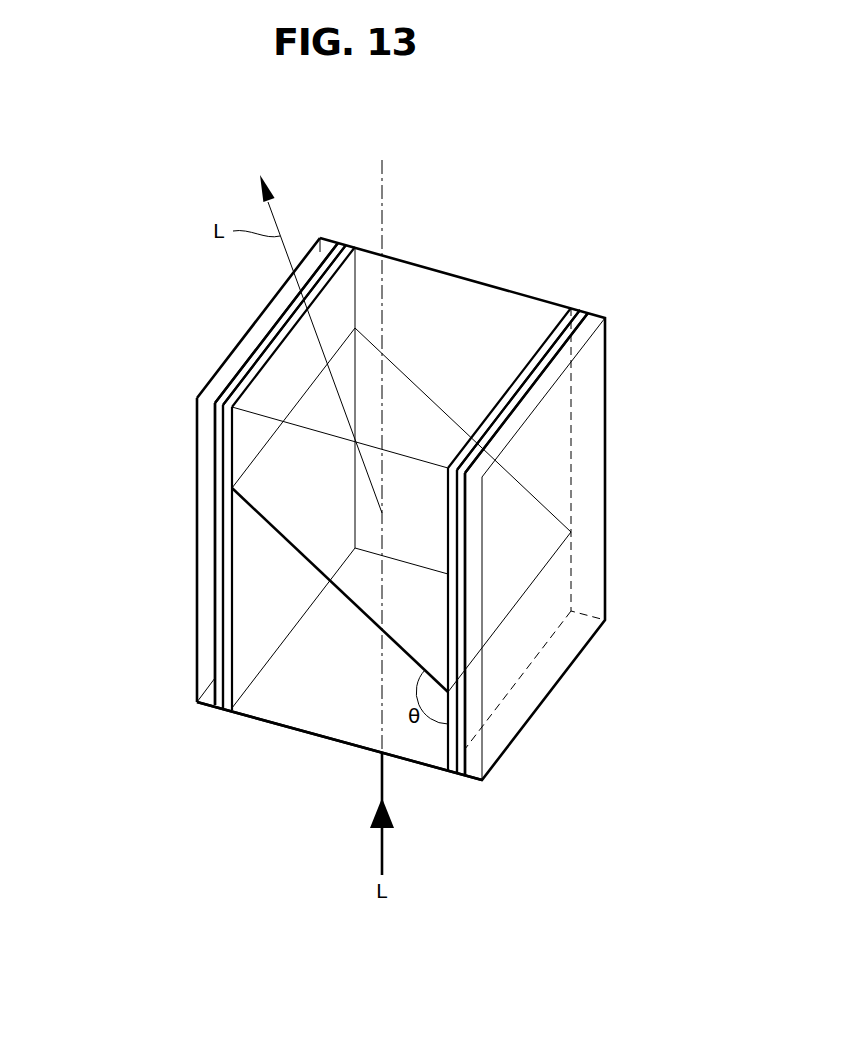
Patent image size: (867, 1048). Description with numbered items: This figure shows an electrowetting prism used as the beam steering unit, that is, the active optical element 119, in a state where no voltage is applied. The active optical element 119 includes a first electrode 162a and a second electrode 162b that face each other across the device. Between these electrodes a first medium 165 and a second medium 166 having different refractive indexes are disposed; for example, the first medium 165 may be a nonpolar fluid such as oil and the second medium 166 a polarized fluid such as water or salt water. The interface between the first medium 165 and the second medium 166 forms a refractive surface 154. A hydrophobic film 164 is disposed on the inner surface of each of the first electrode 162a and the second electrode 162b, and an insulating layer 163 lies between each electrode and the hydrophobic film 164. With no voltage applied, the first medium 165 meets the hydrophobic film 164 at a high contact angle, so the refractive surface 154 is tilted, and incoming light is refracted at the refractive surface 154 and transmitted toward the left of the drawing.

The active optical element 119 is at (632, 525).
The refractive surface 154 is at (338, 593).
The first medium 165 is at (343, 703).
The second medium 166 is at (418, 548).
The first electrode 162a is at (245, 343).
The second electrode 162b is at (595, 320).
The insulating layer 163 is at (243, 370).
The hydrophobic film 164 is at (233, 392).